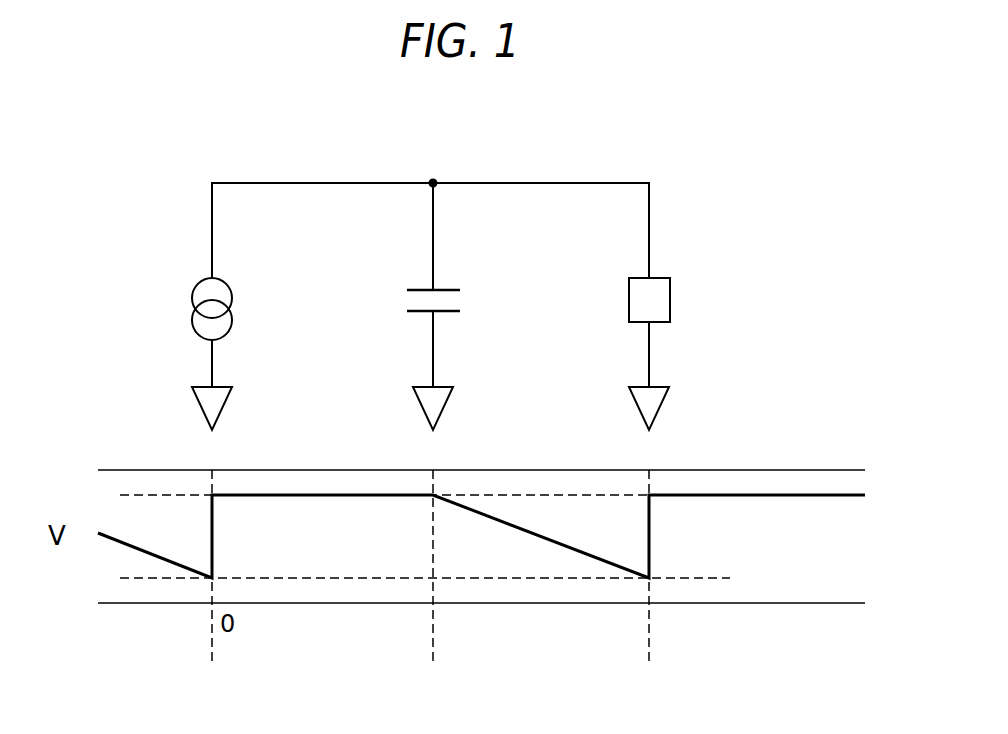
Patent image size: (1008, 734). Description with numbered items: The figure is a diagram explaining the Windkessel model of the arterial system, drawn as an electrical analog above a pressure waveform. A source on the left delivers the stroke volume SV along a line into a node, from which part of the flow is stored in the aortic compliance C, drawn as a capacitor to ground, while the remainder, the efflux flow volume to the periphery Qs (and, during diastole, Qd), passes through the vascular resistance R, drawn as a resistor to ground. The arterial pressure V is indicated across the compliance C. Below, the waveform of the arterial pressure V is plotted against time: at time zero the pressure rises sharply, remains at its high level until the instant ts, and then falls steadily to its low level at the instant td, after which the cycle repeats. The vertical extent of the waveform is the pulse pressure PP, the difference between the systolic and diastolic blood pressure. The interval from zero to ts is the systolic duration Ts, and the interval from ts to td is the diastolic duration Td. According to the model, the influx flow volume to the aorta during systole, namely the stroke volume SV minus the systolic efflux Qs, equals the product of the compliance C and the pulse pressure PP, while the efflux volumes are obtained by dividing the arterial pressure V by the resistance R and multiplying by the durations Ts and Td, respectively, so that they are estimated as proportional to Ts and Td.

The stroke volume SV is at (335, 183).
The efflux flow volume to the periphery during a systole Qs is at (433, 183).
The arterial pressure V is at (381, 198).
The aortic compliance C is at (463, 301).
The vascular resistance R is at (672, 301).
The pulse pressure PP is at (135, 508).
The time ts is at (452, 624).
The time td is at (668, 624).
The systolic duration Ts is at (419, 653).
The diastolic duration Td is at (635, 653).